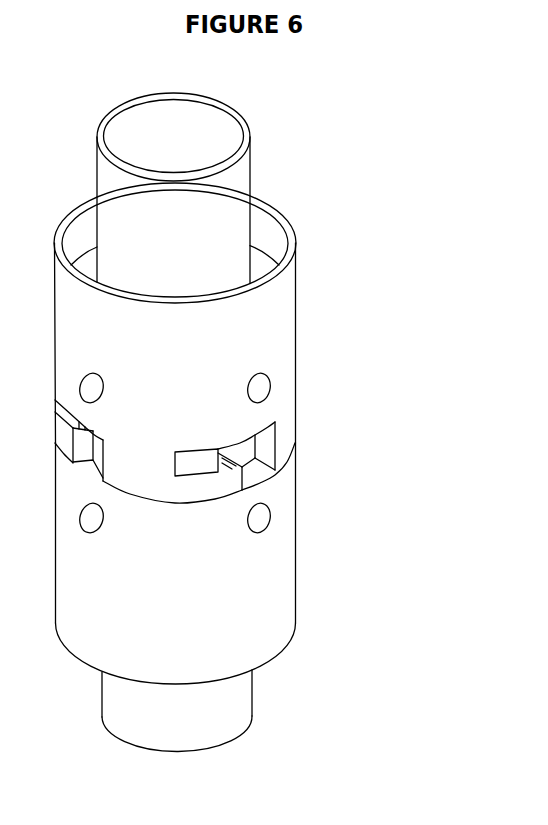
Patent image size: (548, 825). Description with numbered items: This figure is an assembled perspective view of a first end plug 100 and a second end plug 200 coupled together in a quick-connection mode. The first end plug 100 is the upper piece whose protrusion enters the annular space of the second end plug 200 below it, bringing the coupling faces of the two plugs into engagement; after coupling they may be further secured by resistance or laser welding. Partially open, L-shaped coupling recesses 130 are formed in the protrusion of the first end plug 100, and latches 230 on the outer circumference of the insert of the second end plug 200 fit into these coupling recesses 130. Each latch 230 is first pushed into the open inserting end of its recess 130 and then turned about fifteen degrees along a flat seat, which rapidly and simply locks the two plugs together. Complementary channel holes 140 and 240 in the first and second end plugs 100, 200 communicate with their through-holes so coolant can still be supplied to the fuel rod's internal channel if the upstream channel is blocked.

The first end plug 100 is at (318, 174).
The second end plug 200 is at (319, 612).
The complementary channel hole 140 is at (262, 391).
The complementary channel hole 240 is at (262, 514).
The coupling recess 130 is at (257, 468).
The latch 230 is at (200, 455).